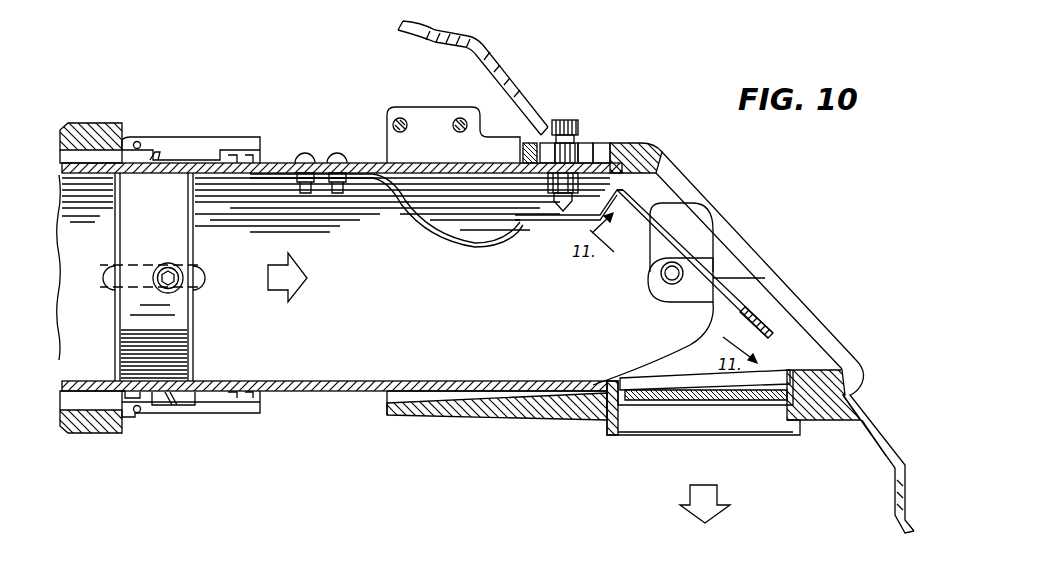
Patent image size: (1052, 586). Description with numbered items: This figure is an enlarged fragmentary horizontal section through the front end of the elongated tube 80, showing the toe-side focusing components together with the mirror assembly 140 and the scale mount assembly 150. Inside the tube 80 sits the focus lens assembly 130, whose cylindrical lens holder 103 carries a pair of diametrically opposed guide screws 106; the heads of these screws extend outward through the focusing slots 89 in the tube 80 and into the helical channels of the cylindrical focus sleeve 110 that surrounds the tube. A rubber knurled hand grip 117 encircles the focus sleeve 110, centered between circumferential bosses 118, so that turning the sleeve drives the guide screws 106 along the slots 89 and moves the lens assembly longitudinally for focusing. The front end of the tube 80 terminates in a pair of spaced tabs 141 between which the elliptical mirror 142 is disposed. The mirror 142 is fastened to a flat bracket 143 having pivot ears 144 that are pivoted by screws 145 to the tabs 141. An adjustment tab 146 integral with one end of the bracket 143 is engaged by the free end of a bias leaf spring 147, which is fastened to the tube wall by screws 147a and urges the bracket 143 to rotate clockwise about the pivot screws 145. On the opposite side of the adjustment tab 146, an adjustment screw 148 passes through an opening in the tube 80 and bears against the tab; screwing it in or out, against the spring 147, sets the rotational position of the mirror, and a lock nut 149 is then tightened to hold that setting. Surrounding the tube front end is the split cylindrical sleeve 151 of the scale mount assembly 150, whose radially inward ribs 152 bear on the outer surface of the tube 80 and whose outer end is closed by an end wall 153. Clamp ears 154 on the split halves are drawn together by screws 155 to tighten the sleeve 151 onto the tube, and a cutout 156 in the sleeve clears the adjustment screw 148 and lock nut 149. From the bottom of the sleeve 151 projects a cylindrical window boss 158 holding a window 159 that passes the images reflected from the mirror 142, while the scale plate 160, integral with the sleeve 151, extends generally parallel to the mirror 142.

The tube 80 is at (327, 391).
The focusing slots 89 is at (207, 276).
The lens holder 103 is at (183, 238).
The guide screws 106 is at (157, 280).
The focus sleeve 110 is at (178, 413).
The hand grip 117 is at (95, 123).
The circumferential bosses 118 is at (140, 138).
The focus lens assembly 130 is at (173, 192).
The mirror assembly 140 is at (603, 299).
The tabs 141 is at (700, 237).
The mirror 142 is at (648, 228).
The bracket 143 is at (758, 326).
The pivot ears 144 is at (677, 303).
The screws 145 is at (664, 277).
The adjustment tab 146 is at (520, 233).
The bias leaf spring 147 is at (432, 229).
The screws 147a is at (335, 152).
The adjustment screw 148 is at (607, 107).
The lock nut 149 is at (592, 145).
The scale mount assembly 150 is at (585, 445).
The split cylindrical sleeve 151 is at (463, 419).
The ribs 152 is at (413, 396).
The end wall 153 is at (752, 258).
The clamp ears 154 is at (395, 107).
The screws 155 is at (450, 118).
The cutout 156 is at (537, 140).
The window boss 158 is at (798, 433).
The window 159 is at (662, 401).
The scale plate 160 is at (500, 70).